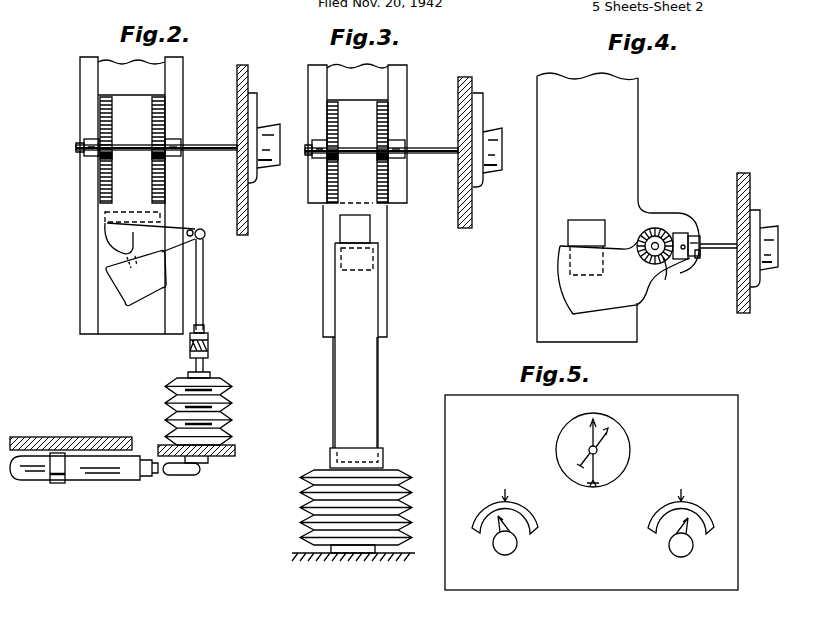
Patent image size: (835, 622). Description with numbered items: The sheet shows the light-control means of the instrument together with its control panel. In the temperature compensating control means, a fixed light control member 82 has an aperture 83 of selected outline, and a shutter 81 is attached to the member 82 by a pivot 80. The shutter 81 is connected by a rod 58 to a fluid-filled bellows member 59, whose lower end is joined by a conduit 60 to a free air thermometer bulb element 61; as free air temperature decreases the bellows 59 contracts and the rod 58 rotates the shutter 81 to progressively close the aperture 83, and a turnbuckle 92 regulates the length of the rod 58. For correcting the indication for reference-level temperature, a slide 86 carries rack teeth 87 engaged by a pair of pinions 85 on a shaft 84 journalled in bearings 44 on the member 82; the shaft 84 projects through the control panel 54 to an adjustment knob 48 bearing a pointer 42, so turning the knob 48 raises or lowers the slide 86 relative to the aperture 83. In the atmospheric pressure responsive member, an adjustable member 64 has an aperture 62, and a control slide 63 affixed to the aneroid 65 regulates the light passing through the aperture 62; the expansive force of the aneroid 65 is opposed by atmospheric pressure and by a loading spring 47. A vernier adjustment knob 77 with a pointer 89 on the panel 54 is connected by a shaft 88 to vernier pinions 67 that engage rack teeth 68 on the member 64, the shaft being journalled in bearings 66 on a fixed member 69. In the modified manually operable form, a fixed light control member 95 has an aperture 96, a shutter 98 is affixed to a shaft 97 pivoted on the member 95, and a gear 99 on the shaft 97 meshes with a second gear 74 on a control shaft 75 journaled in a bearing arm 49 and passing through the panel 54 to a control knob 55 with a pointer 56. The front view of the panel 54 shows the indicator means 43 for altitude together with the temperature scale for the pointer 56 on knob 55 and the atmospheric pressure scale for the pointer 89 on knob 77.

In FIG. 2, the pointer 42 is at (255, 93).
In FIG. 5, the indicator means 43 is at (622, 456).
In FIG. 2, the bearings 44 is at (88, 140).
In FIG. 3, the loading spring 47 is at (330, 464).
In FIG. 2, the adjustment knob 48 is at (268, 163).
In FIG. 4, the bearing arm 49 is at (699, 258).
In FIG. 2, the control panel 54 is at (243, 65).
In FIG. 3, the control panel 54 is at (470, 82).
In FIG. 4, the control panel 54 is at (742, 313).
In FIG. 5, the control panel 54 is at (725, 465).
In FIG. 4, the control knob 55 is at (758, 268).
In FIG. 5, the control knob 55 is at (493, 541).
In FIG. 4, the pointer 56 is at (757, 210).
In FIG. 5, the pointer 56 is at (485, 522).
In FIG. 2, the rod 58 is at (203, 298).
In FIG. 2, the bellows member 59 is at (218, 418).
In FIG. 2, the conduit 60 is at (186, 476).
In FIG. 2, the free air thermometer bulb element 61 is at (95, 478).
In FIG. 3, the aperture 62 is at (370, 228).
In FIG. 3, the control slide 63 is at (370, 367).
In FIG. 3, the adjustable member 64 is at (380, 265).
In FIG. 3, the aneroid 65 is at (305, 512).
In FIG. 3, the bearings 66 is at (318, 142).
In FIG. 3, the vernier pinions 67 is at (327, 165).
In FIG. 3, the rack teeth 68 is at (324, 206).
In FIG. 3, the fixed member 69 is at (315, 75).
In FIG. 4, the second gear 74 is at (678, 233).
In FIG. 4, the control shaft 75 is at (727, 250).
In FIG. 3, the vernier adjustment knob 77 is at (497, 170).
In FIG. 5, the vernier adjustment knob 77 is at (690, 548).
In FIG. 2, the pivot 80 is at (190, 230).
In FIG. 2, the shutter 81 is at (125, 275).
In FIG. 2, the fixed light control member 82 is at (82, 223).
In FIG. 2, the aperture 83 is at (118, 233).
In FIG. 2, the shaft 84 is at (200, 152).
In FIG. 2, the pinions 85 is at (100, 156).
In FIG. 2, the slide 86 is at (160, 214).
In FIG. 2, the rack teeth 87 is at (100, 110).
In FIG. 3, the shaft 88 is at (438, 148).
In FIG. 3, the pointer 89 is at (483, 110).
In FIG. 5, the pointer 89 is at (703, 525).
In FIG. 2, the turnbuckle 92 is at (208, 348).
In FIG. 4, the fixed light control member 95 is at (622, 140).
In FIG. 4, the aperture 96 is at (596, 222).
In FIG. 4, the shaft 97 is at (656, 232).
In FIG. 4, the shutter 98 is at (637, 300).
In FIG. 4, the gear 99 is at (665, 270).